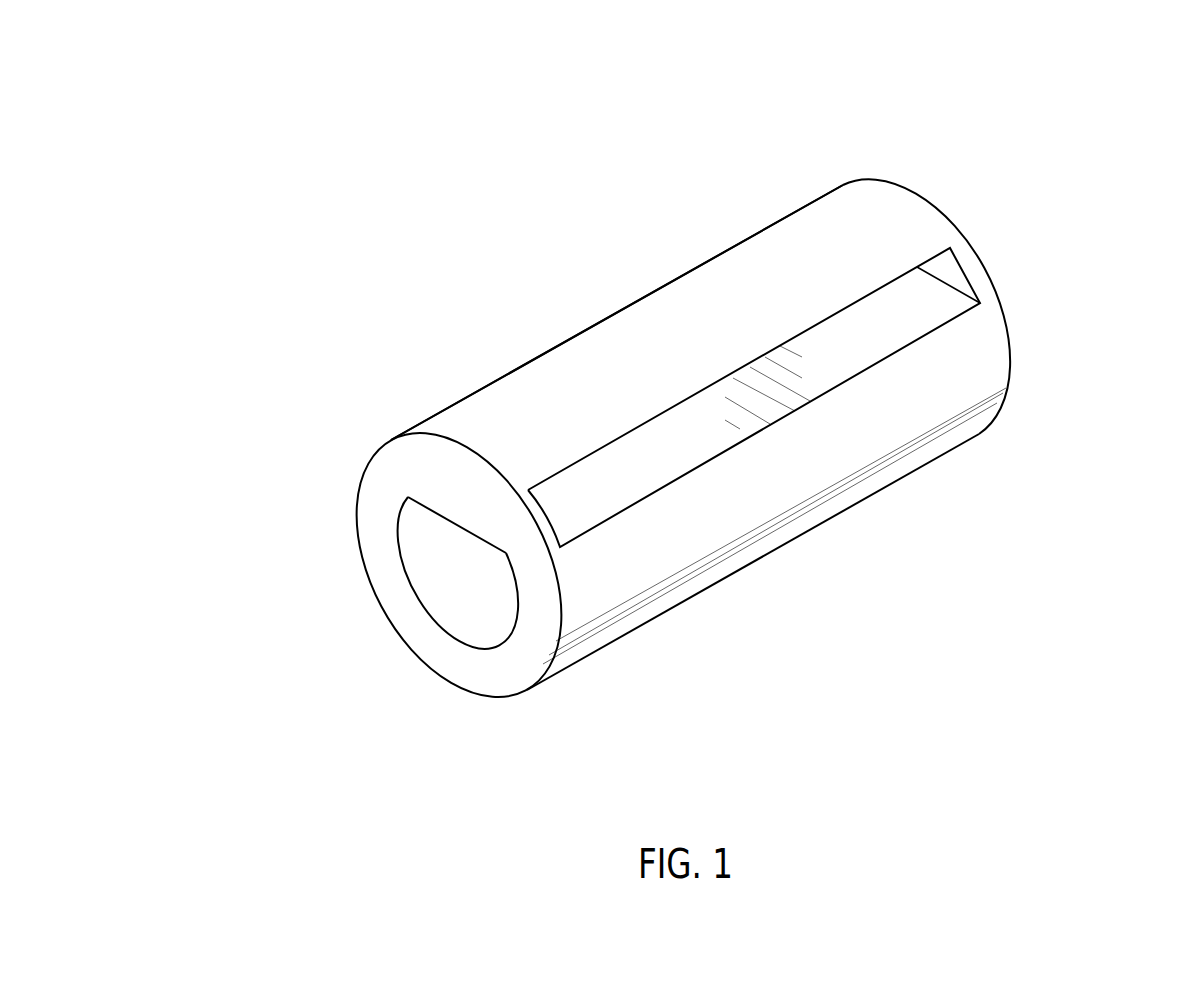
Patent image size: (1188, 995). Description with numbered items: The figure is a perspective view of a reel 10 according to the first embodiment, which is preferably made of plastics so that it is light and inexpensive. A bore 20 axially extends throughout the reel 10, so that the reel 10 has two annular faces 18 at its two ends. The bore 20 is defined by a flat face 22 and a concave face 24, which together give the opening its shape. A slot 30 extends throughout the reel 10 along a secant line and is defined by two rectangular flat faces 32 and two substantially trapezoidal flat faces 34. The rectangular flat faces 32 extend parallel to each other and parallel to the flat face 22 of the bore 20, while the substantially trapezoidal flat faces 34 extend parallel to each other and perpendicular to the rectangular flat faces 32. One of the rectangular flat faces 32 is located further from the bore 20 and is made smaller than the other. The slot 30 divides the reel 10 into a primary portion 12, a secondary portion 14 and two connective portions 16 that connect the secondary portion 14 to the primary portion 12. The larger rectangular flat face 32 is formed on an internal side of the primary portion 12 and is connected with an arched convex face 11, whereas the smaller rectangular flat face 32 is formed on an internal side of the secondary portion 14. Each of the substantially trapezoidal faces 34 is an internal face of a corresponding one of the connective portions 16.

The reel 10 is at (958, 147).
The arched convex face 11 is at (443, 680).
The primary portion 12 is at (897, 450).
The secondary portion 14 is at (750, 258).
The connective portions 16 is at (980, 277).
The annular faces 18 is at (503, 692).
The bore 20 is at (257, 500).
The flat face 22 is at (450, 522).
The concave face 24 is at (447, 585).
The slot 30 is at (1118, 382).
The rectangular flat faces 32 is at (887, 350).
The substantially trapezoidal flat faces 34 is at (962, 285).